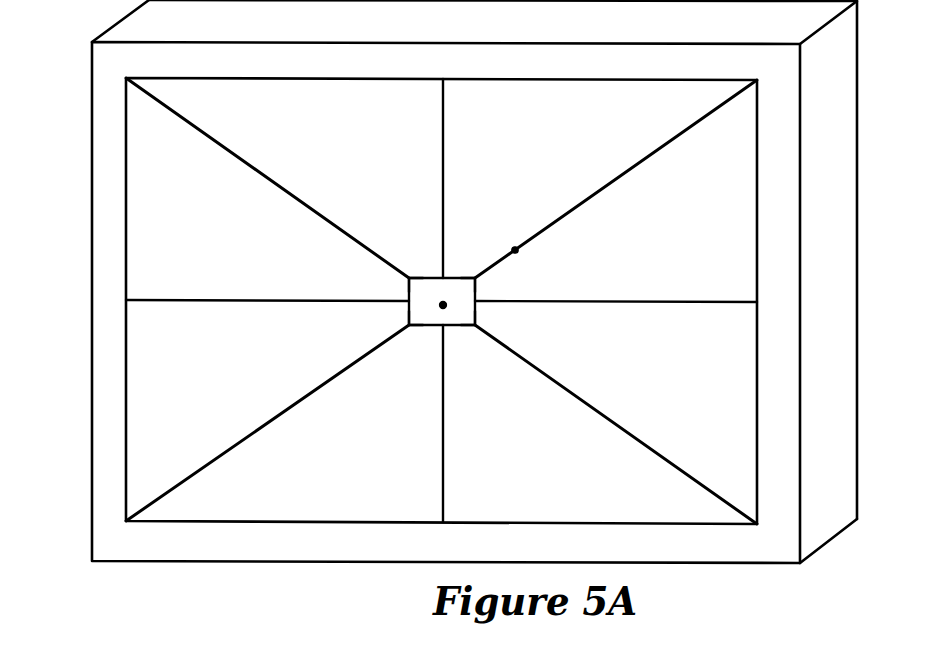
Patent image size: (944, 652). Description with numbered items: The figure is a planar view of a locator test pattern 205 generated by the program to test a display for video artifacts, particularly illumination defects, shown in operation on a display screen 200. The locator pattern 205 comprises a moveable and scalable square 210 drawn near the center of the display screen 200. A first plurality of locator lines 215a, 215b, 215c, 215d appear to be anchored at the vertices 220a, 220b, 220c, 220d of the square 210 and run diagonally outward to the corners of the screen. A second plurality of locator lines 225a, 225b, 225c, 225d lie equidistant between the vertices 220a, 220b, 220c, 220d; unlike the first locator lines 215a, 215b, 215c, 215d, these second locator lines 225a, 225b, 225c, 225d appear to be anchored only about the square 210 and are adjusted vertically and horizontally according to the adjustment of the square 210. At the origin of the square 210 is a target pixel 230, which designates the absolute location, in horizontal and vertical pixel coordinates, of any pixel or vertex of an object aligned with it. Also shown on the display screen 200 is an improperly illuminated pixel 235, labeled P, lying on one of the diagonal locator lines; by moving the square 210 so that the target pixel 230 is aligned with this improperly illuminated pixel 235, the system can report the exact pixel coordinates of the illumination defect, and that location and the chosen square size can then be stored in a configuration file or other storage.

The display screen 200 is at (126, 423).
The locator pattern 205 is at (263, 88).
The square 210 is at (455, 278).
The first locator line 215a is at (266, 176).
The first locator line 215b is at (303, 397).
The first locator line 215c is at (590, 407).
The first locator line 215d is at (627, 172).
The vertex of the square 220a is at (410, 278).
The vertex of the square 220b is at (409, 308).
The vertex of the square 220c is at (467, 325).
The vertex of the square 220d is at (477, 298).
The second locator line 225a is at (253, 300).
The second locator line 225b is at (443, 433).
The second locator line 225c is at (623, 302).
The second locator line 225d is at (443, 177).
The target pixel 230 is at (443, 305).
The improperly illuminated pixel 235 is at (522, 251).